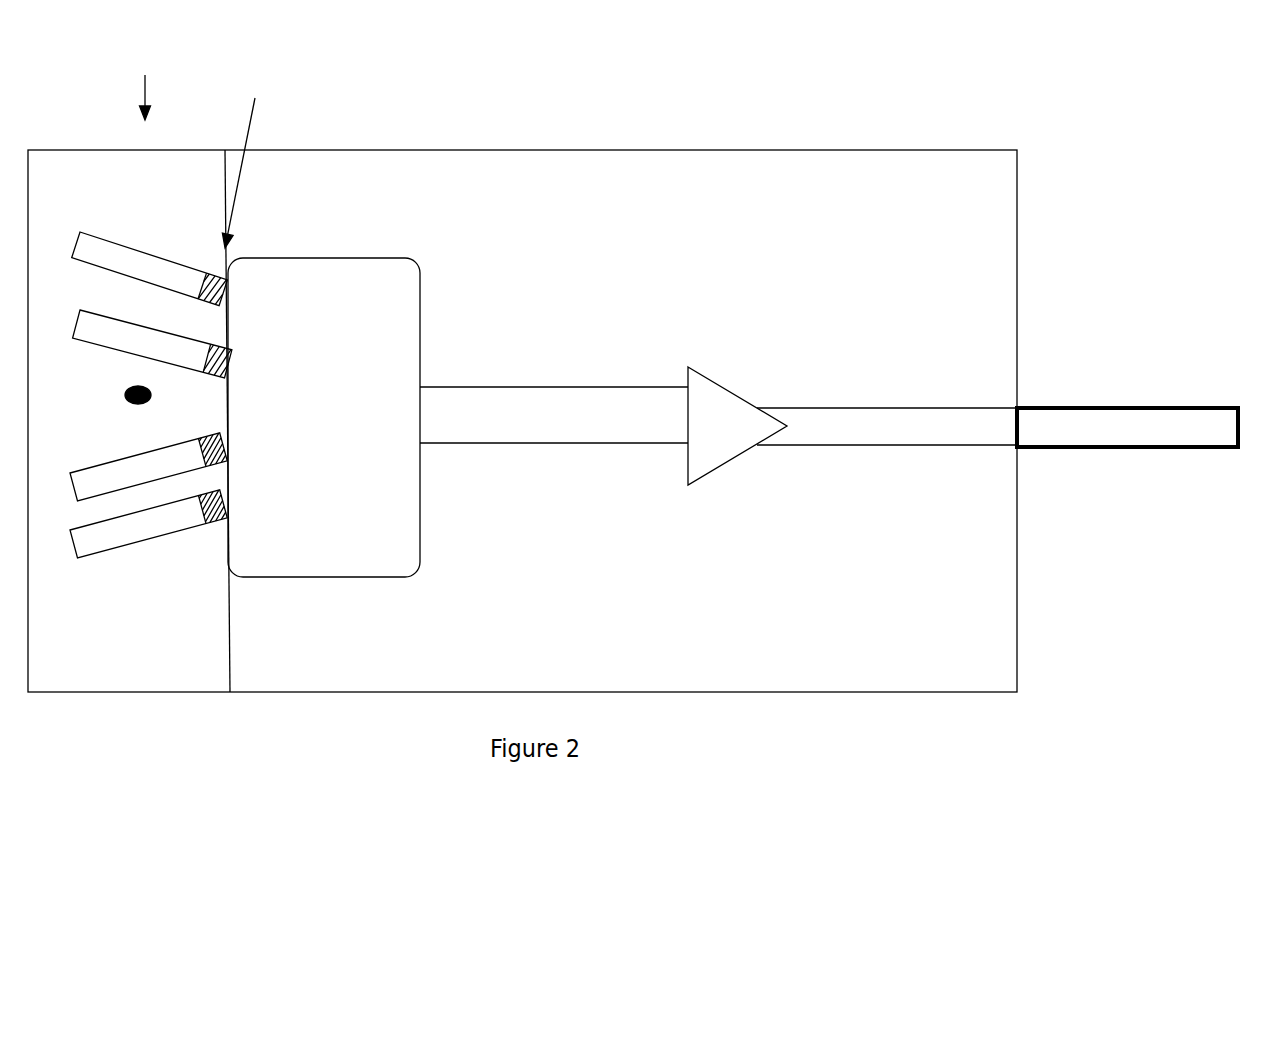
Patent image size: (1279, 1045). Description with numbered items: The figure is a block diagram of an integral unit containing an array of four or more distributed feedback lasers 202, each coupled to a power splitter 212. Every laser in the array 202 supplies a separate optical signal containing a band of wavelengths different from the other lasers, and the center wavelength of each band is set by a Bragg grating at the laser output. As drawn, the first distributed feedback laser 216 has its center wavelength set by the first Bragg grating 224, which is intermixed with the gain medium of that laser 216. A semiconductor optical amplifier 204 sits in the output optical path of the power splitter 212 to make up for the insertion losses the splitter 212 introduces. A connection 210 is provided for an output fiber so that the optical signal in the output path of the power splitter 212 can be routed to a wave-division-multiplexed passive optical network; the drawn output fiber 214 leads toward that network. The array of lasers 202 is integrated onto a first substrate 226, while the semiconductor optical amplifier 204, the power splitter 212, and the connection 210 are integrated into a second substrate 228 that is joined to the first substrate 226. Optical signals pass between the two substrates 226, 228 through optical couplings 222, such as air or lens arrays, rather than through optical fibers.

The array of distributed feedback lasers 202 is at (123, 182).
The semiconductor optical amplifier 204 is at (738, 437).
The connection 210 is at (984, 384).
The power splitter 212 is at (355, 520).
The output fiber to WDM PON 214 is at (1093, 479).
The first distributed feedback laser 216 is at (100, 210).
The optical couplings 222 is at (532, 481).
The first Bragg grating 224 is at (207, 254).
The first substrate 226 is at (173, 668).
The second substrate 228 is at (890, 652).